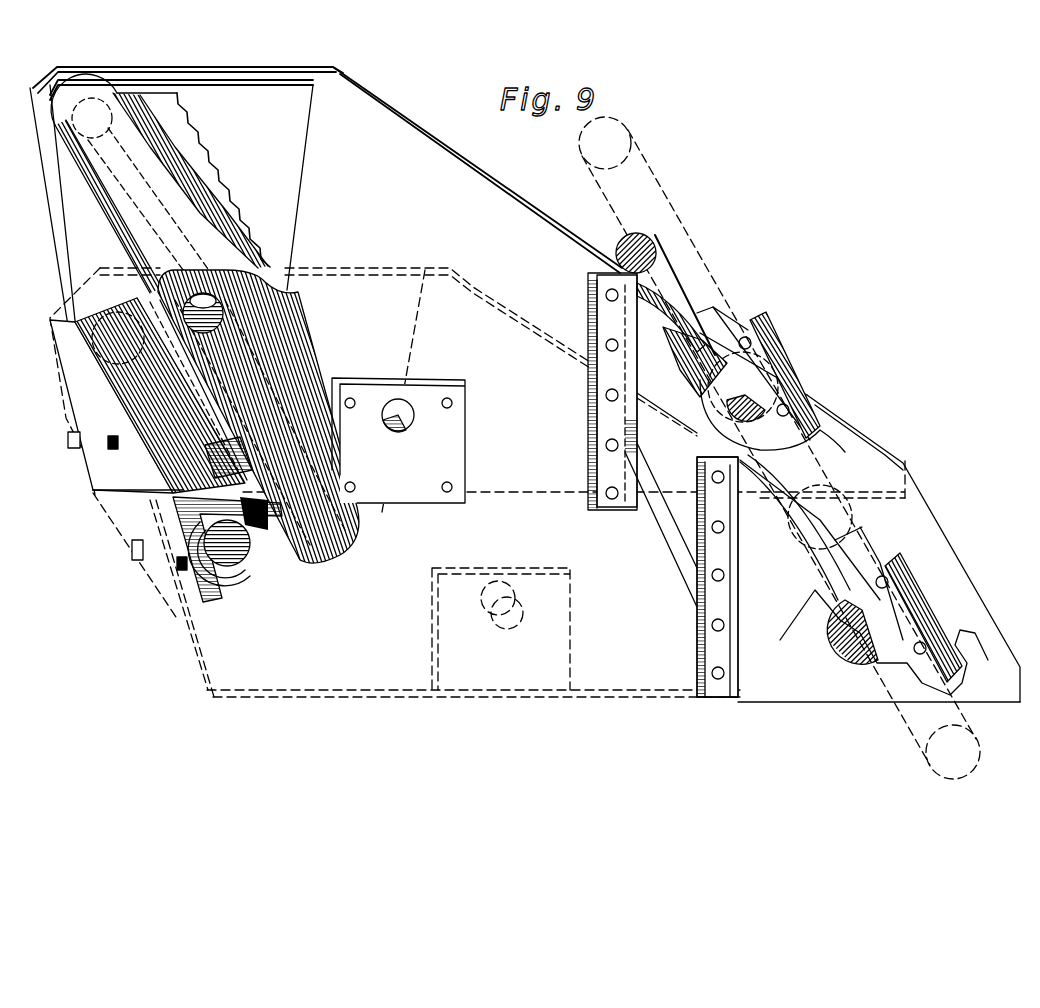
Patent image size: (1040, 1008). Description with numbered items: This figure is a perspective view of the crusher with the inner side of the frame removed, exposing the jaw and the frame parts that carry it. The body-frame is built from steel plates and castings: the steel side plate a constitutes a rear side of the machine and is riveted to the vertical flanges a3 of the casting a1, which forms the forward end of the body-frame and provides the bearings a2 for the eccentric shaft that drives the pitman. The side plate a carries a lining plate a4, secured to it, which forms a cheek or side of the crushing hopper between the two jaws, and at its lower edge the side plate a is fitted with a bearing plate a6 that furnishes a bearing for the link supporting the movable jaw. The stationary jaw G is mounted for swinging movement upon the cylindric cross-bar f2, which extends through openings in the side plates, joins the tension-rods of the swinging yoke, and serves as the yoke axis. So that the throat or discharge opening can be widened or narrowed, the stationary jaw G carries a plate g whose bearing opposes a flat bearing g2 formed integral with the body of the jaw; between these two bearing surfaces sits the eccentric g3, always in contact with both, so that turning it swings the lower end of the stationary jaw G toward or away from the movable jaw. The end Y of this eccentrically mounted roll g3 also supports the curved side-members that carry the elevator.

The steel side plate a is at (388, 102).
The casting a1 is at (655, 205).
The bearing a2 is at (755, 380).
The vertical flange a3 is at (708, 613).
The lining plate a4 is at (285, 92).
The bearing plate a6 is at (380, 384).
The stationary jaw G is at (258, 268).
The cylindric cross-bar f2 is at (218, 322).
The plate g is at (210, 562).
The bearing g2 is at (280, 520).
The eccentric g3 is at (255, 558).
The end of eccentrically mounted roll Y is at (238, 560).